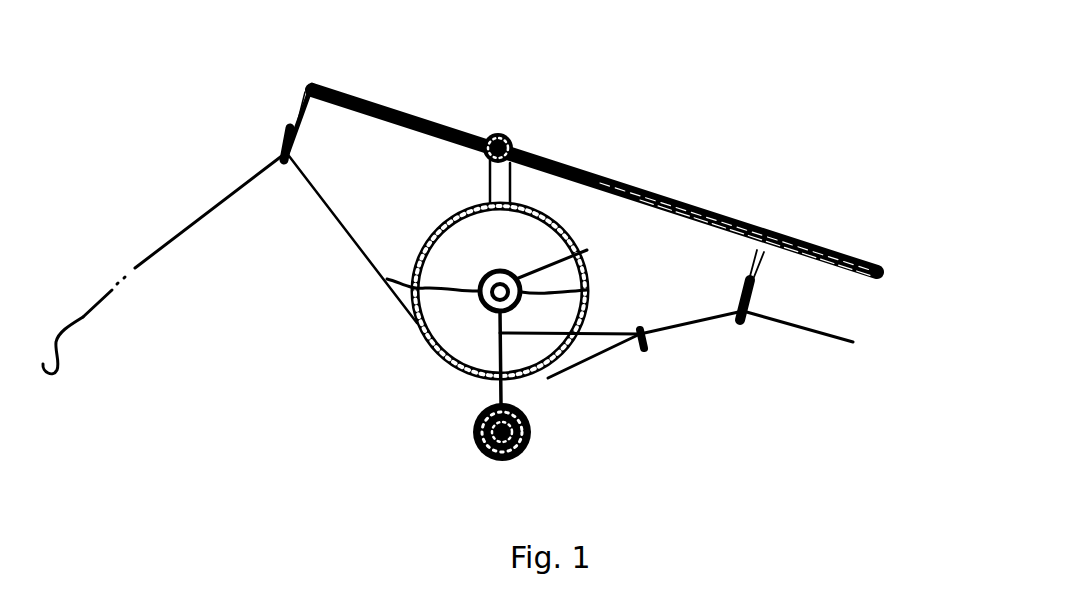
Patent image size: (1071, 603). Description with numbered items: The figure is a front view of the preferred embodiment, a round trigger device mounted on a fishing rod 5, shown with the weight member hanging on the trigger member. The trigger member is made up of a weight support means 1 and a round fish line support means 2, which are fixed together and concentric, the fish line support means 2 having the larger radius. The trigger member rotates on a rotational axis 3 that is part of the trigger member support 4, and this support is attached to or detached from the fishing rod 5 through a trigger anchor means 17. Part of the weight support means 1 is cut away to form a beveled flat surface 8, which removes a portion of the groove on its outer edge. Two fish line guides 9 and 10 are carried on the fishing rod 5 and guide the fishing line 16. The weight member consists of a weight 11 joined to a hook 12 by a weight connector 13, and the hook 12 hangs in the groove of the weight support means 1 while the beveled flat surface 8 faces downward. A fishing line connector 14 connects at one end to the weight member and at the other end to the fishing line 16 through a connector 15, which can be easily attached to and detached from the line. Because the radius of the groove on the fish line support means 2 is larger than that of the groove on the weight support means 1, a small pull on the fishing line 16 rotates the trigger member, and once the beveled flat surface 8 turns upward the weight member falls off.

The weight support means 1 is at (481, 273).
The fish line support means 2 is at (424, 254).
The rotational axis 3 is at (587, 250).
The trigger member support 4 is at (488, 191).
The fishing rod 5 is at (634, 184).
The beveled flat surface 8 is at (587, 290).
The fish line guide 9 is at (282, 143).
The fish line guide 10 is at (740, 325).
The weight 11 is at (477, 445).
The hook 12 is at (387, 279).
The weight connector 13 is at (495, 390).
The fishing line connector 14 is at (618, 325).
The connector 15 is at (645, 348).
The fishing line 16 is at (150, 257).
The trigger anchor means 17 is at (517, 132).